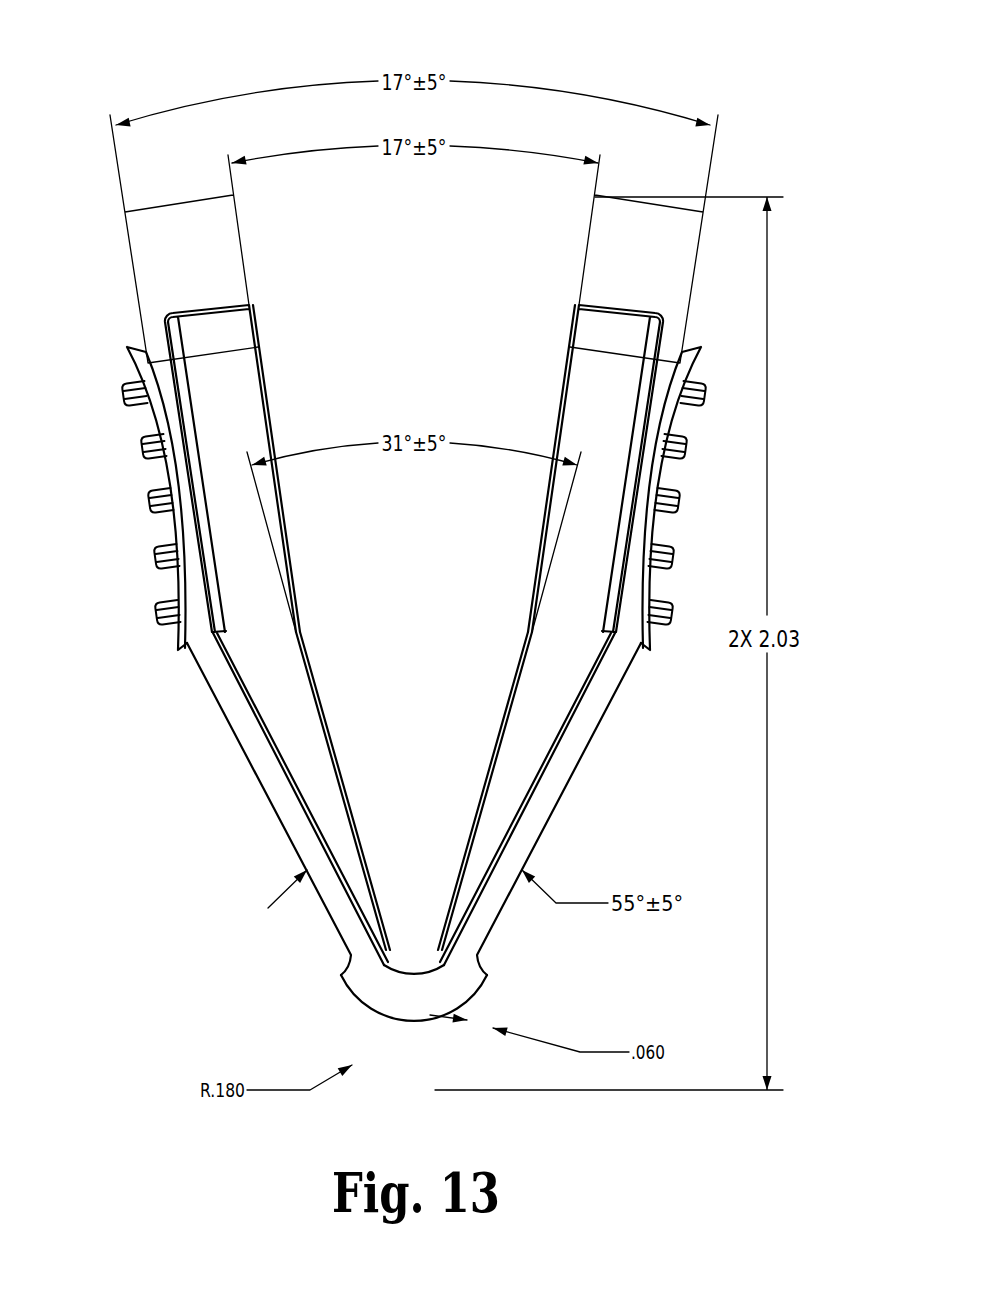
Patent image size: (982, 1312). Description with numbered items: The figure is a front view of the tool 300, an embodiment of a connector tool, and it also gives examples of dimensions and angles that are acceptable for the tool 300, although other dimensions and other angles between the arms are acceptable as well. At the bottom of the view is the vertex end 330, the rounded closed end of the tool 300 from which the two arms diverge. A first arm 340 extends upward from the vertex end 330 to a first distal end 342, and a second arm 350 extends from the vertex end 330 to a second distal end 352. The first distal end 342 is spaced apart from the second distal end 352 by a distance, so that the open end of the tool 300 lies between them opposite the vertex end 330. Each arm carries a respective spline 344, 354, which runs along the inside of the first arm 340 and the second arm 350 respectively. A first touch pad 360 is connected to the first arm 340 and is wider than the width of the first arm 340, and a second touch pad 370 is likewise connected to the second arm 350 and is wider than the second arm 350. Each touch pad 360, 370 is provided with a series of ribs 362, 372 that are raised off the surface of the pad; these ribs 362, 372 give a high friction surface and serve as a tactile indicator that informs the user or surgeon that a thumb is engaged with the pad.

The tool 300 is at (533, 50).
The vertex end 330 is at (388, 1090).
The first arm 340 is at (260, 752).
The first distal end 342 is at (182, 313).
The spline 344 is at (290, 684).
The second arm 350 is at (573, 740).
The second distal end 352 is at (646, 313).
The spline 354 is at (530, 660).
The first touch pad 360 is at (160, 407).
The ribs 362 is at (150, 501).
The second touch pad 370 is at (661, 413).
The ribs 372 is at (678, 500).